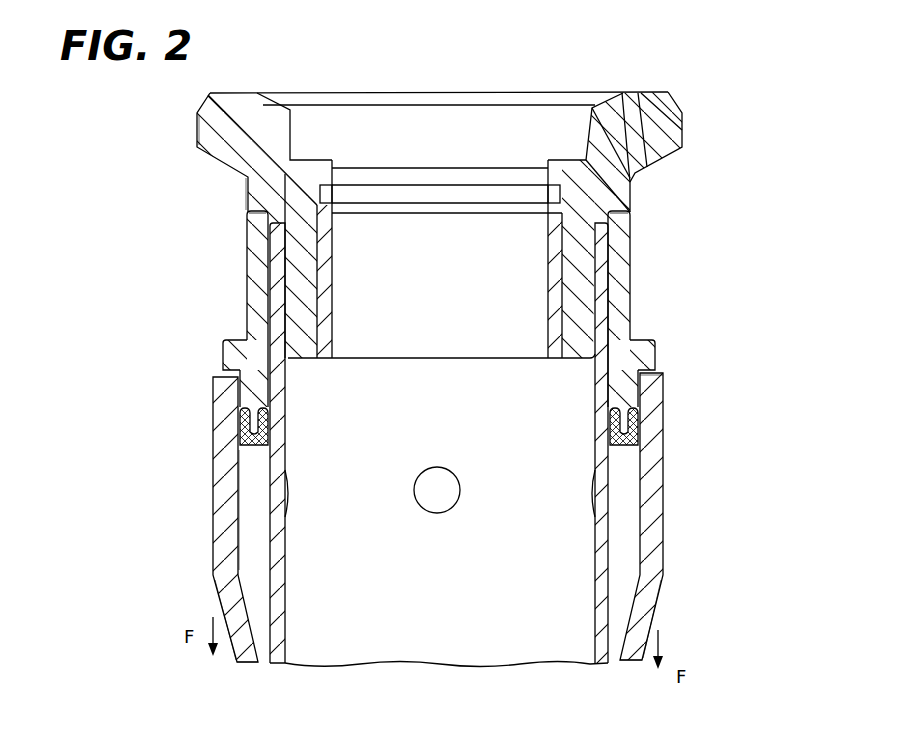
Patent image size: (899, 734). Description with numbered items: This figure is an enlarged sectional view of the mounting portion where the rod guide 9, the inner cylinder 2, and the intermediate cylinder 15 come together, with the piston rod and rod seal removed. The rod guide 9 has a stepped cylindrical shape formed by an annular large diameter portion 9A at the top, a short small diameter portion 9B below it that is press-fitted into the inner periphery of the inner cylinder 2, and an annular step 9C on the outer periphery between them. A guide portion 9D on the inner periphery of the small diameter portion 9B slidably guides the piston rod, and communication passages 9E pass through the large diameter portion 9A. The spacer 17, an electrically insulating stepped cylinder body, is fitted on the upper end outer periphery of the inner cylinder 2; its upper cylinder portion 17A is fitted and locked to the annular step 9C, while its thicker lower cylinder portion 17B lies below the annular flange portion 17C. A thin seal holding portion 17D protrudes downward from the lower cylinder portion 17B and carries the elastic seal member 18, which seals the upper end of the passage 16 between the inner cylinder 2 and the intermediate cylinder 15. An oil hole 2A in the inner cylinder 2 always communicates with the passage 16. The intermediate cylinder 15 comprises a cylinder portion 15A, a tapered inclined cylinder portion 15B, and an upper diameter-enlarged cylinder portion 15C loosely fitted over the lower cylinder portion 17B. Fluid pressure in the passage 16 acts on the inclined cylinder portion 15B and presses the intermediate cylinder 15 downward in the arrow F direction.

The inner cylinder 2 is at (612, 572).
The oil hole 2A is at (280, 490).
The rod guide 9 is at (632, 179).
The large diameter portion 9A is at (225, 130).
The small diameter portion 9B is at (565, 262).
The annular step 9C is at (635, 218).
The guide portion 9D is at (316, 297).
The communication passage 9E is at (645, 145).
The intermediate cylinder 15 is at (213, 546).
The cylinder portion 15A is at (237, 660).
The inclined cylinder portion 15B is at (650, 613).
The diameter-enlarged cylinder portion 15C is at (663, 404).
The passage 16 is at (265, 592).
The spacer 17 is at (632, 297).
The upper cylinder portion 17A is at (258, 215).
The lower cylinder portion 17B is at (240, 387).
The annular flange portion 17C is at (657, 352).
The seal holding portion 17D is at (652, 440).
The elastic seal member 18 is at (246, 423).